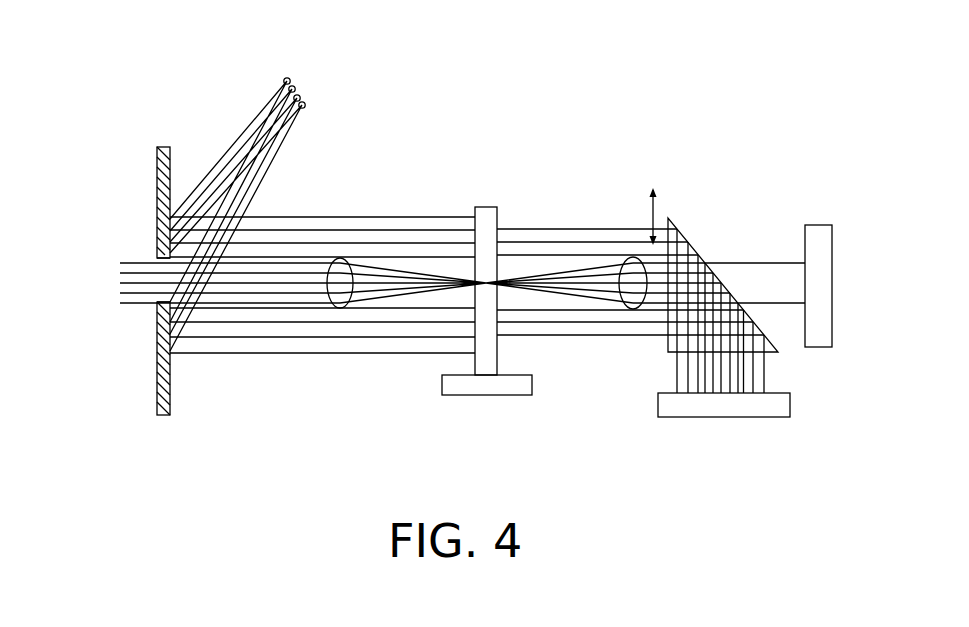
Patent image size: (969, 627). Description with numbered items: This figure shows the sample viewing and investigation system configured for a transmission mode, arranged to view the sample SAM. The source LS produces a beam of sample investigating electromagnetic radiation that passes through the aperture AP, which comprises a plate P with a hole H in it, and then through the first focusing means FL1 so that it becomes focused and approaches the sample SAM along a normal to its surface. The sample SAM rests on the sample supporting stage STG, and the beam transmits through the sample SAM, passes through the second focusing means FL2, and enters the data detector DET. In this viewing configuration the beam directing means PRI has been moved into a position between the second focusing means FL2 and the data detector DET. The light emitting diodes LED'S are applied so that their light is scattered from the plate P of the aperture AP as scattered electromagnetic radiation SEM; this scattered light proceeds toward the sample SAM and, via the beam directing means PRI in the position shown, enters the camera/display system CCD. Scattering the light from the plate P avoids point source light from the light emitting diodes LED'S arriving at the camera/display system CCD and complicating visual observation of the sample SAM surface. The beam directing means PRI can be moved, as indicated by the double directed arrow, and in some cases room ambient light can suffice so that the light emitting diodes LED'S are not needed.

The source LS is at (95, 243).
The aperture AP is at (171, 127).
The plate P is at (150, 382).
The hole H is at (162, 277).
The light emitting diodes LED'S is at (289, 204).
The scattered electromagnetic radiation SEM is at (298, 364).
The first focusing means FL1 is at (341, 256).
The sample SAM is at (489, 206).
The sample supporting stage STG is at (435, 384).
The second focusing means FL2 is at (633, 256).
The beam directing means PRI is at (707, 246).
The camera/display system CCD is at (724, 405).
The data detector DET is at (732, 286).